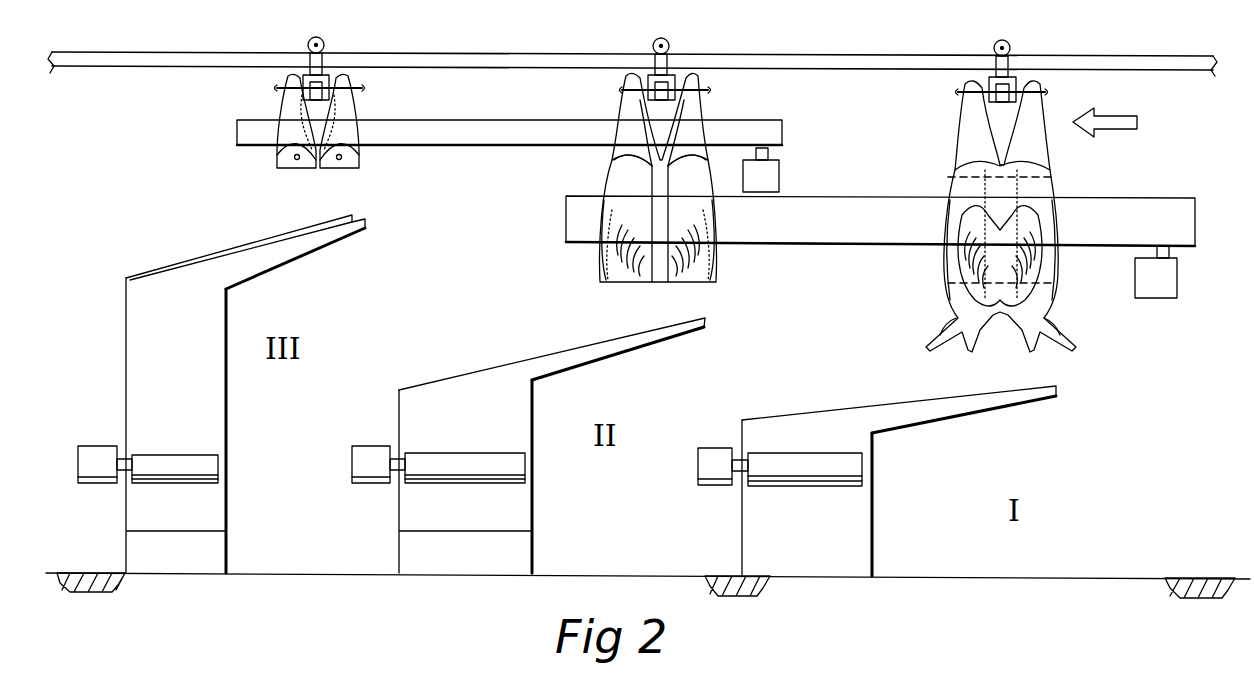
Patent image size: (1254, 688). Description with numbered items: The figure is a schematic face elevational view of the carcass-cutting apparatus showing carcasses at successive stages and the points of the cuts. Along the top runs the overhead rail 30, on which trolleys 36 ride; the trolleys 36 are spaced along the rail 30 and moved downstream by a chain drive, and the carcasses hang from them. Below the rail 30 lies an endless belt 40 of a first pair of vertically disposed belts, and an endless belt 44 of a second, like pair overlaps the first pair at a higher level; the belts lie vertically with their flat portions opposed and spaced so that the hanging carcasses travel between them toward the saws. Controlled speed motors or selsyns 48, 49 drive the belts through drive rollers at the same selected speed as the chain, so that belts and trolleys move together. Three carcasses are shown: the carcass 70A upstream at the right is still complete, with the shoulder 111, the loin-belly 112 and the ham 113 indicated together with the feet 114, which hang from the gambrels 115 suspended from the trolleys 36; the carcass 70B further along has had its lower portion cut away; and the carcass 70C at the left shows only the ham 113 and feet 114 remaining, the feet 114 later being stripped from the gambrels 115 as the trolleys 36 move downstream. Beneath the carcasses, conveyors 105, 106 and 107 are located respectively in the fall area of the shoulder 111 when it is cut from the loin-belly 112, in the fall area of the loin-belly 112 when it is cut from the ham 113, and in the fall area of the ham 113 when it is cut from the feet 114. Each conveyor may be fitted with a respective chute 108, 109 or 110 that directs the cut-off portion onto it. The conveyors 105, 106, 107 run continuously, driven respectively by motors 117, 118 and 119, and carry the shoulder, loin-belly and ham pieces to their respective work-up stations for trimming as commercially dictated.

The overhead rail 30 is at (797, 54).
The trolleys 36 is at (320, 38).
The endless belt 40 is at (812, 234).
The endless belt 44 is at (470, 136).
The controlled speed motor or selsyn 48 is at (1151, 290).
The controlled speed motor or selsyn 49 is at (780, 170).
The carcass 70A is at (1058, 287).
The carcass 70B is at (717, 266).
The carcass 70C is at (362, 164).
The conveyor 105 is at (873, 512).
The conveyor 106 is at (533, 510).
The conveyor 107 is at (227, 519).
The chute 108 is at (975, 411).
The chute 109 is at (645, 348).
The chute 110 is at (312, 248).
The shoulder 111 is at (942, 312).
The loin-belly 112 is at (602, 262).
The ham 113 is at (278, 154).
The feet 114 is at (361, 90).
The gambrels 115 is at (282, 89).
The motor 117 is at (698, 471).
The motor 118 is at (352, 464).
The motor 119 is at (78, 460).